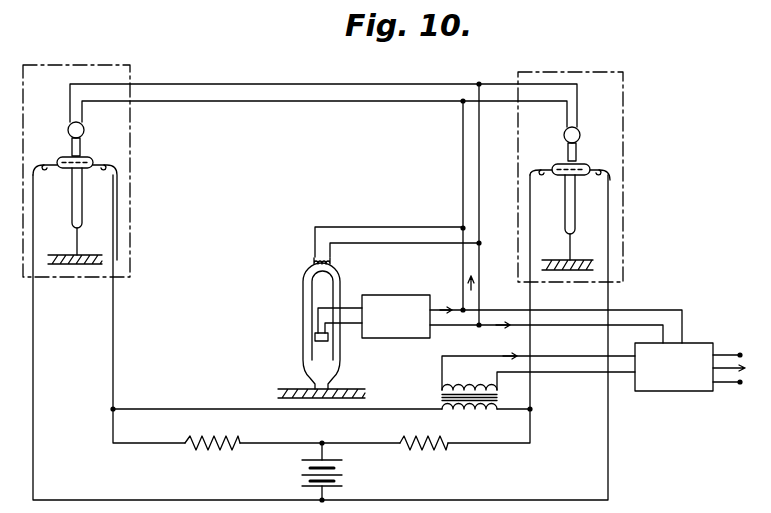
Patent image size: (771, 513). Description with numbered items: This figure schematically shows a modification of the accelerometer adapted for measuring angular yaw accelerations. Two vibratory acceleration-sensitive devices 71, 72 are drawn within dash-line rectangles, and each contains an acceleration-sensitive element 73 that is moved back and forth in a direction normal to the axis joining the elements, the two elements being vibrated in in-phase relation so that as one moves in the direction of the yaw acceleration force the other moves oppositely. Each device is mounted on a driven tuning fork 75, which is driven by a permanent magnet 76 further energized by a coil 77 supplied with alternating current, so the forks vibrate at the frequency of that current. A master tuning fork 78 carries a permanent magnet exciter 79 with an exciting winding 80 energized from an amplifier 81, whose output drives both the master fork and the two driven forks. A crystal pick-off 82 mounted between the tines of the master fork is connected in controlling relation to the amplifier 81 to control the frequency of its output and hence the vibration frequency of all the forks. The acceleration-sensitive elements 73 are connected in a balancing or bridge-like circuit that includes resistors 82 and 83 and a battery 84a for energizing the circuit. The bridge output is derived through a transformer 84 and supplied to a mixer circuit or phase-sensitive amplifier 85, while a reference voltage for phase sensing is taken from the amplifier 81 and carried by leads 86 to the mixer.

The vibratory acceleration-sensitive device 71 is at (105, 65).
The vibratory acceleration-sensitive device 72 is at (591, 72).
The acceleration-sensitive element 73 is at (86, 158).
The driven tuning fork 75 is at (82, 212).
The permanent magnet 76 is at (70, 150).
The coil 77 is at (68, 127).
The master tuning fork 78 is at (303, 306).
The permanent magnet exciter 79 is at (305, 272).
The exciting winding 80 is at (314, 258).
The amplifier 81 is at (396, 295).
The crystal pick-off / resistor 82 is at (316, 341).
The resistor 83 is at (436, 450).
The transformer 84 is at (442, 397).
The battery 84a is at (344, 480).
The mixer circuit 85 is at (685, 385).
The leads 86 is at (648, 326).